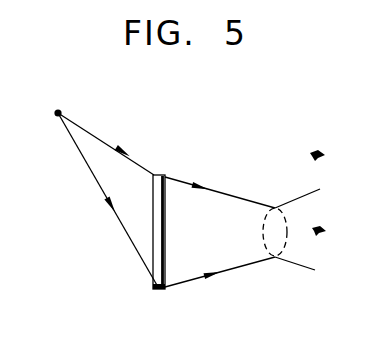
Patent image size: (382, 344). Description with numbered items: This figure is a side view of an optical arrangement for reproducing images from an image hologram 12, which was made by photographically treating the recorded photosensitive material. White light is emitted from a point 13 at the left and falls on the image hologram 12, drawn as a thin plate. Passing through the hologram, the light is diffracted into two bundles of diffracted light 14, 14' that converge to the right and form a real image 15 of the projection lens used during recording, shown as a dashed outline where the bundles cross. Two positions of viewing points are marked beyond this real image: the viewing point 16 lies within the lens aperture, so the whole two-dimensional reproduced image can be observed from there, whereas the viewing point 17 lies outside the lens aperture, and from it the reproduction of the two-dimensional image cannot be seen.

The image hologram 12 is at (159, 176).
The white light emission position 13 is at (57, 112).
The diffracted light 14 is at (220, 186).
The diffracted light 14' is at (220, 292).
The real image of the projection lens 15 is at (275, 259).
The viewing point 16 is at (324, 232).
The viewing point 17 is at (323, 155).